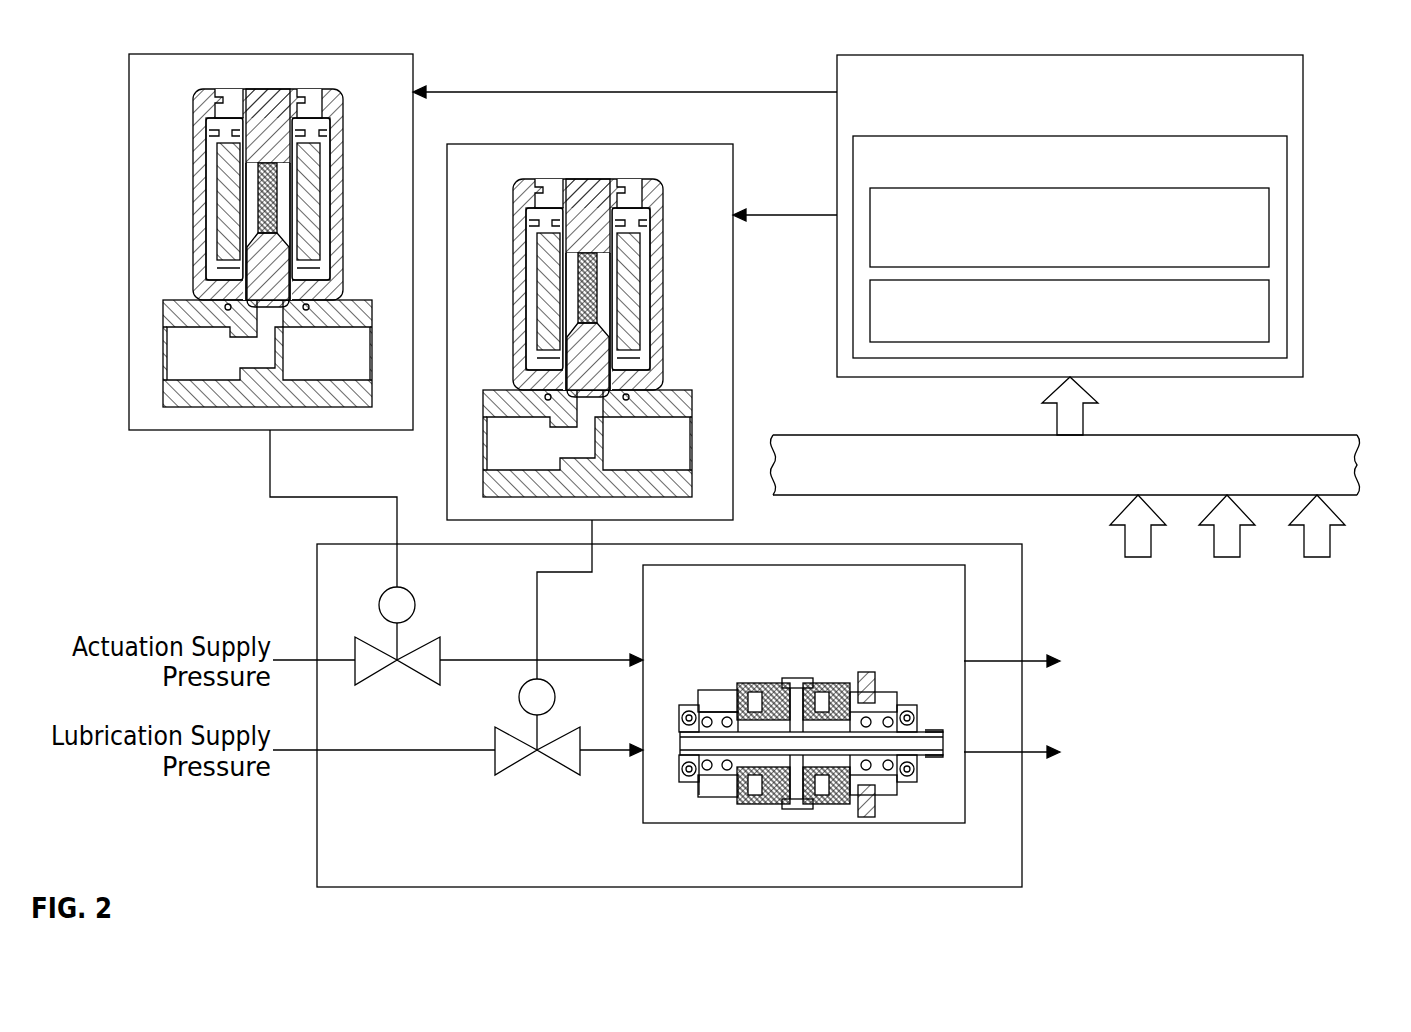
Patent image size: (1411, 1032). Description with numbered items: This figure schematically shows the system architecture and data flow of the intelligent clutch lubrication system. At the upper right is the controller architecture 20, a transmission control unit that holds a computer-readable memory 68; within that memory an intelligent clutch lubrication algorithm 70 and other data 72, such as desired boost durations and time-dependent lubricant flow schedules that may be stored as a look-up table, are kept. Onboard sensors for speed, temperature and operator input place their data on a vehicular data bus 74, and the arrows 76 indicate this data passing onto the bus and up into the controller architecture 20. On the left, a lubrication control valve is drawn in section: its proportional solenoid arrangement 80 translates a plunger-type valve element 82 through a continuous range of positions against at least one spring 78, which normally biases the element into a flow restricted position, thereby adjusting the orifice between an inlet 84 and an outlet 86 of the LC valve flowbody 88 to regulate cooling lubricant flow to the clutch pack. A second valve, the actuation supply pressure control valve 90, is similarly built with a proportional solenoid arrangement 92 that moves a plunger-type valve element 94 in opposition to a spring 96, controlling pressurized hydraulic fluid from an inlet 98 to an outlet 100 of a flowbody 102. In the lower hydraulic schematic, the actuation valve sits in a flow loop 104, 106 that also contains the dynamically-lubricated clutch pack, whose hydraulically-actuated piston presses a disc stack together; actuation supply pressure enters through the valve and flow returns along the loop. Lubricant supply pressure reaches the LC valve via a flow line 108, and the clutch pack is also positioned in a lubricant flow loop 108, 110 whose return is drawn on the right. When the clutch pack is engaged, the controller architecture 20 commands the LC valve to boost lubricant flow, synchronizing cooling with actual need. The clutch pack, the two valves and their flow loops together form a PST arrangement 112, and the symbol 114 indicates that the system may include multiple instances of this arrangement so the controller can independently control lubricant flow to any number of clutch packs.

The controller architecture 20 is at (1277, 97).
The memory 68 is at (1260, 173).
The intelligent clutch lubrication algorithm 70 is at (1270, 227).
The other data 72 is at (1270, 308).
The vehicular data bus 74 is at (1326, 435).
The arrows 76 is at (1055, 422).
The spring 78 is at (601, 262).
The proportional solenoid arrangement 80 is at (542, 260).
The valve element 82 is at (607, 358).
The inlet 84 is at (540, 458).
The outlet 86 is at (661, 458).
The LC valve flowbody 88 is at (503, 393).
The actuation supply pressure control valve 90 is at (352, 84).
The proportional solenoid arrangement 92 is at (222, 170).
The plunger-type valve element 94 is at (287, 268).
The spring 96 is at (281, 172).
The inlet 98 is at (220, 368).
The outlet 100 is at (352, 368).
The flowbody 102 is at (183, 303).
The flow loop 104 is at (463, 658).
The flow loop 106 is at (976, 658).
The flow line 108 is at (357, 760).
The lubricant flow loop 110 is at (976, 749).
The PST arrangement 112 is at (860, 878).
The symbol 114 is at (1052, 876).